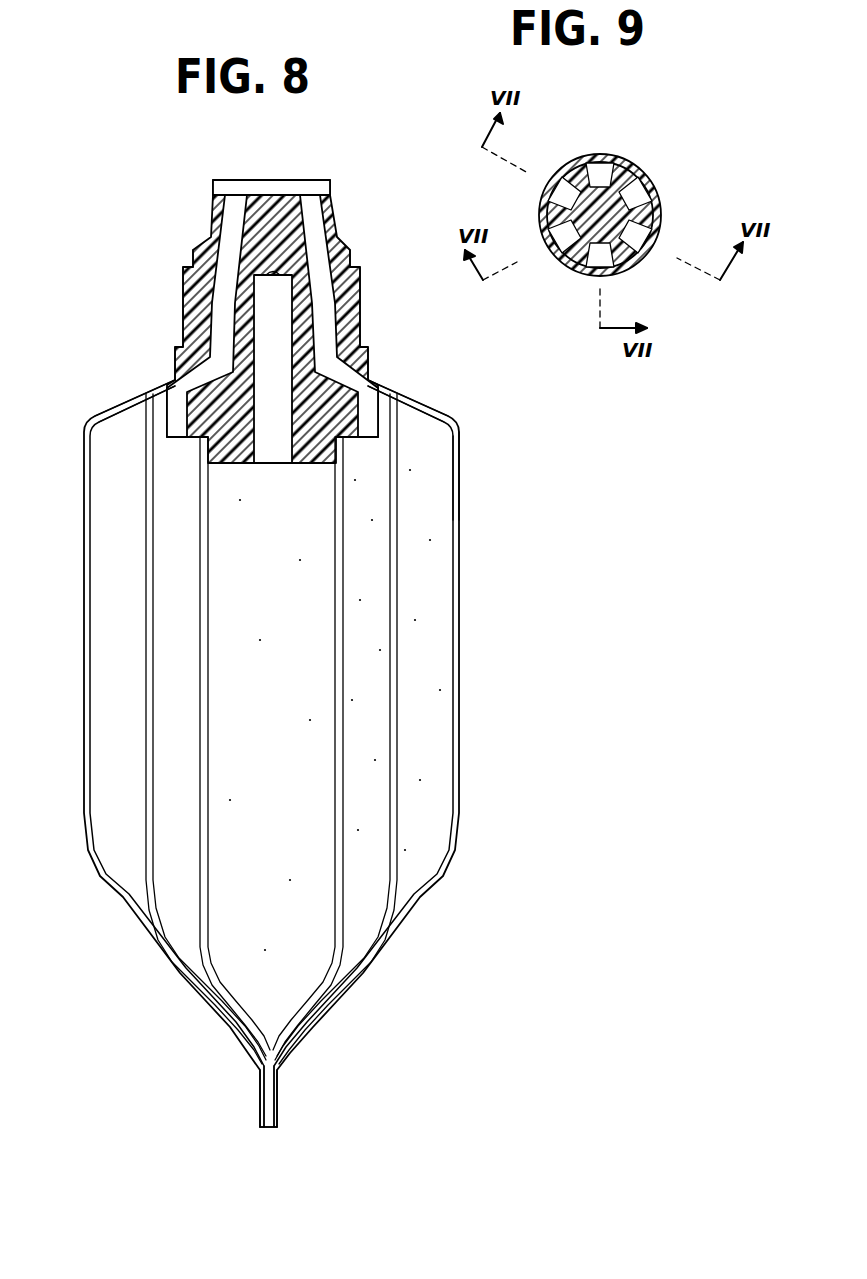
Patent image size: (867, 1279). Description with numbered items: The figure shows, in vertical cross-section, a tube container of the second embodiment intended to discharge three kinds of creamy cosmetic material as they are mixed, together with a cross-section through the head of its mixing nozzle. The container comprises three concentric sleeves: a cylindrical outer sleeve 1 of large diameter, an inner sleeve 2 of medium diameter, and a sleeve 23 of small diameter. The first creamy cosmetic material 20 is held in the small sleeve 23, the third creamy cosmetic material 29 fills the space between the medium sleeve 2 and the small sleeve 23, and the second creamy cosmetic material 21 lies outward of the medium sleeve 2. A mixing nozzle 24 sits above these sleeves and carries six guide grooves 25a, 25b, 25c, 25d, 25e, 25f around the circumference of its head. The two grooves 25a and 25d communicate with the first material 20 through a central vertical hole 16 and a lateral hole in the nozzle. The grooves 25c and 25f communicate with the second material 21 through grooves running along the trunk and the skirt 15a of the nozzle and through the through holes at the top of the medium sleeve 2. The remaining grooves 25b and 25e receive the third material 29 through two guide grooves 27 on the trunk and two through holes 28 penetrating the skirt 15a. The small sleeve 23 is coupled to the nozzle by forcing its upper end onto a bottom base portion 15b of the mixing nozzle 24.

In FIG. 8, the outer sleeve 1 is at (462, 652).
In FIG. 8, the inner sleeve 2 is at (405, 708).
In FIG. 8, the skirt 15a is at (140, 390).
In FIG. 8, the bottom base portion 15b is at (355, 458).
In FIG. 8, the vertical hole 16 is at (263, 447).
In FIG. 8, the first creamy cosmetic material 20 is at (290, 805).
In FIG. 8, the second creamy cosmetic material 21 is at (430, 763).
In FIG. 8, the sleeve of small diameter 23 is at (350, 523).
In FIG. 8, the mixing nozzle 24 is at (320, 320).
In FIG. 9, the guide groove 25a is at (603, 260).
In FIG. 8, the guide groove 25b is at (313, 230).
In FIG. 9, the guide groove 25b is at (633, 237).
In FIG. 9, the guide groove 25c is at (637, 190).
In FIG. 9, the guide groove 25d is at (613, 170).
In FIG. 8, the guide groove 25e is at (232, 215).
In FIG. 9, the guide groove 25e is at (565, 190).
In FIG. 9, the guide groove 25f is at (565, 250).
In FIG. 8, the guide grooves 27 is at (217, 363).
In FIG. 8, the through holes 28 is at (177, 397).
In FIG. 8, the third creamy cosmetic material 29 is at (370, 578).